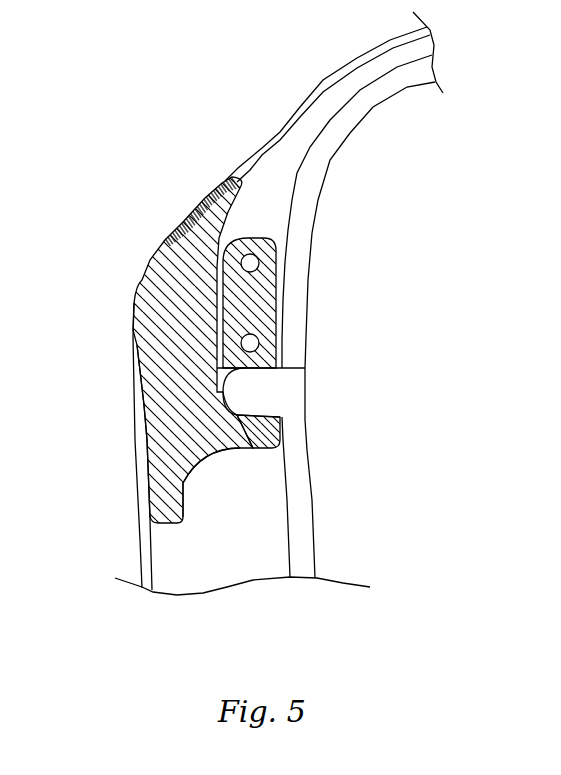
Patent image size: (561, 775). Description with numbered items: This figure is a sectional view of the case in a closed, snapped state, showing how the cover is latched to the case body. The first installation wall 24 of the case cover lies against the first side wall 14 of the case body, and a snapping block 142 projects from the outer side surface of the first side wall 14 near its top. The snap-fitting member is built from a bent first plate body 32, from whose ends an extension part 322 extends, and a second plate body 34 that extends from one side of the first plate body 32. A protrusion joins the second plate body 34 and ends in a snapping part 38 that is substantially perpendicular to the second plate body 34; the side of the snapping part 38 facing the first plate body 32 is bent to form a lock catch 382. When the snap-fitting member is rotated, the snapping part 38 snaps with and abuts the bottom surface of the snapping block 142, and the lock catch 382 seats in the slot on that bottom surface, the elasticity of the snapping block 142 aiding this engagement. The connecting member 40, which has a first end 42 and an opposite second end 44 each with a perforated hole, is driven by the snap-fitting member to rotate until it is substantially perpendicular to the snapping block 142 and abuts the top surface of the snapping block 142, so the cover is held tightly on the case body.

The first side wall 14 is at (302, 538).
The first installation wall 24 is at (308, 212).
The first plate body 32 is at (149, 259).
The extension part 322 is at (183, 215).
The second plate body 34 is at (148, 422).
The snapping part 38 is at (253, 448).
The lock catch 382 is at (283, 427).
The connecting member 40 is at (278, 314).
The first end 42 is at (282, 368).
The second end 44 is at (278, 263).
The snapping block 142 is at (245, 397).